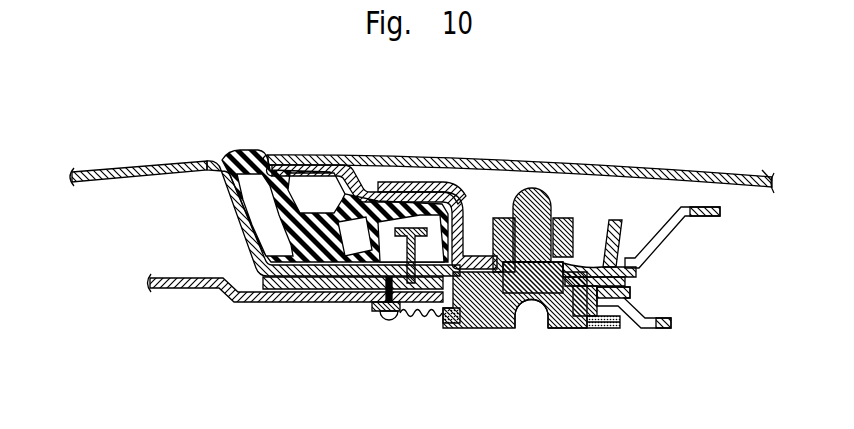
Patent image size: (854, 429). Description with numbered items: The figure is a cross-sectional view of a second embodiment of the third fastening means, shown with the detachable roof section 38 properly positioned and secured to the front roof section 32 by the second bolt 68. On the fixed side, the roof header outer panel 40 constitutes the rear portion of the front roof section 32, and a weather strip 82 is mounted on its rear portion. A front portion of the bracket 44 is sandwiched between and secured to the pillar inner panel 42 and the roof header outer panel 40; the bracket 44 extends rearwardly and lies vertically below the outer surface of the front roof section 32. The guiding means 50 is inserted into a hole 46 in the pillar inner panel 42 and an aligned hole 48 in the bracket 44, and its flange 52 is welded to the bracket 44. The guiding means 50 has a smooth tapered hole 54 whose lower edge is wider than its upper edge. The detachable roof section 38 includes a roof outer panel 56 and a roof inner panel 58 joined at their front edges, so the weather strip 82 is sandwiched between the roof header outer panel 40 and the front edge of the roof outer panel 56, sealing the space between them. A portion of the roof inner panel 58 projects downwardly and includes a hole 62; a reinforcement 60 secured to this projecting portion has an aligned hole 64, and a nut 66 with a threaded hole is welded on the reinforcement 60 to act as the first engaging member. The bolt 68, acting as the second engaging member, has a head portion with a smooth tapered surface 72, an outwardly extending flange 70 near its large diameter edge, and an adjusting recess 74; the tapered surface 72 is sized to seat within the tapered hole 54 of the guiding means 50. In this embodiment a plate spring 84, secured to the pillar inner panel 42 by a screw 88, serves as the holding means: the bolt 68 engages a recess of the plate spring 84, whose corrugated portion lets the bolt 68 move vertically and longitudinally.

The front roof section 32 is at (142, 157).
The roof header outer panel 40 is at (200, 157).
The weather strip 82 is at (257, 152).
The reinforcement 60 is at (433, 196).
The aligned hole 64 is at (527, 188).
The hole 62 is at (550, 195).
The roof outer panel 56 is at (688, 170).
The detachable roof section 38 is at (740, 172).
The tapered surface 72 is at (483, 262).
The nut 66 is at (577, 243).
The tapered hole 54 is at (584, 246).
The roof inner panel 58 is at (712, 217).
The flange 52 is at (627, 281).
The flange 70 is at (645, 338).
The hole 46 is at (577, 327).
The aligned hole 48 is at (583, 328).
The bolt 68 is at (563, 330).
The adjusting recess 74 is at (528, 318).
The guiding means 50 is at (473, 327).
The plate spring 84 is at (430, 322).
The screw 88 is at (383, 317).
The bracket 44 is at (280, 292).
The pillar inner panel 42 is at (237, 304).